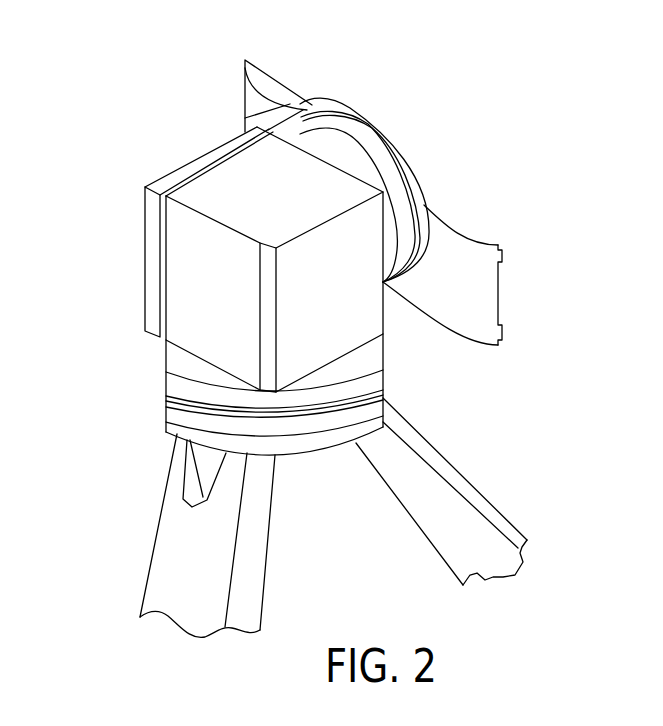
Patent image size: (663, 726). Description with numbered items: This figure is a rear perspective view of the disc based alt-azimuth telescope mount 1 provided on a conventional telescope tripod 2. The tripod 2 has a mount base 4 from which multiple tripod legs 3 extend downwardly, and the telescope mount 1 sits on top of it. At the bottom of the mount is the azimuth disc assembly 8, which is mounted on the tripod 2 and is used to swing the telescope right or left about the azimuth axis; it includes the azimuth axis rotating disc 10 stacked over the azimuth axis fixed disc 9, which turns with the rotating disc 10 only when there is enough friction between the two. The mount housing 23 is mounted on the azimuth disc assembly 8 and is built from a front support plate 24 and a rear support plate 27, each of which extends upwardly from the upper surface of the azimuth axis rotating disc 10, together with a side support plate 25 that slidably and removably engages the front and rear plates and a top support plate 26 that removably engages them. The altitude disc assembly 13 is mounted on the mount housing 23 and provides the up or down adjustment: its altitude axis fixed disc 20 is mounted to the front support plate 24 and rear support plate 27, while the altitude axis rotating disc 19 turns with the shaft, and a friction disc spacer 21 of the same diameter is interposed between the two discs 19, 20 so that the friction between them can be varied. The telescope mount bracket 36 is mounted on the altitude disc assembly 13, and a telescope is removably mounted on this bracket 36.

The telescope mount 1 is at (174, 92).
The telescope tripod 2 is at (149, 440).
The tripod legs 3 is at (152, 575).
The mount base 4 is at (172, 420).
The azimuth disc assembly 8 is at (309, 478).
The azimuth axis fixed disc 9 is at (337, 424).
The azimuth axis rotating disc 10 is at (170, 377).
The altitude disc assembly 13 is at (445, 160).
The altitude axis rotating disc 19 is at (408, 170).
The altitude axis fixed disc 20 is at (291, 129).
The friction disc spacer 21 is at (371, 148).
The mount housing 23 is at (128, 283).
The front support plate 24 is at (338, 305).
The side support plate 25 is at (234, 310).
The top support plate 26 is at (285, 198).
The rear support plate 27 is at (152, 240).
The telescope mount bracket 36 is at (452, 318).